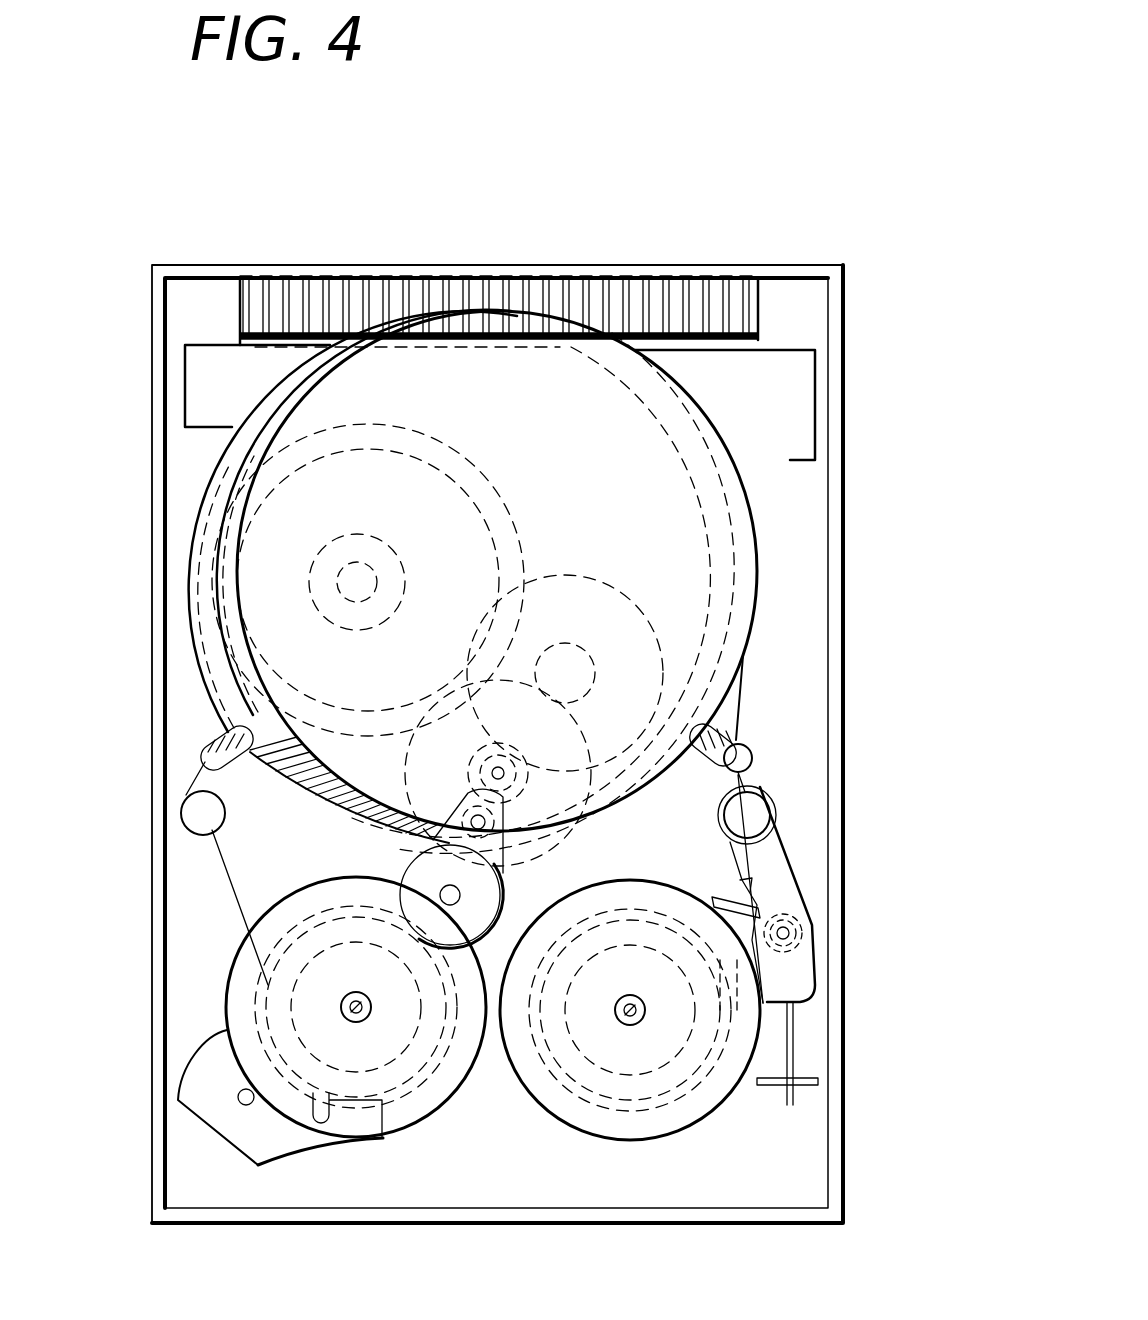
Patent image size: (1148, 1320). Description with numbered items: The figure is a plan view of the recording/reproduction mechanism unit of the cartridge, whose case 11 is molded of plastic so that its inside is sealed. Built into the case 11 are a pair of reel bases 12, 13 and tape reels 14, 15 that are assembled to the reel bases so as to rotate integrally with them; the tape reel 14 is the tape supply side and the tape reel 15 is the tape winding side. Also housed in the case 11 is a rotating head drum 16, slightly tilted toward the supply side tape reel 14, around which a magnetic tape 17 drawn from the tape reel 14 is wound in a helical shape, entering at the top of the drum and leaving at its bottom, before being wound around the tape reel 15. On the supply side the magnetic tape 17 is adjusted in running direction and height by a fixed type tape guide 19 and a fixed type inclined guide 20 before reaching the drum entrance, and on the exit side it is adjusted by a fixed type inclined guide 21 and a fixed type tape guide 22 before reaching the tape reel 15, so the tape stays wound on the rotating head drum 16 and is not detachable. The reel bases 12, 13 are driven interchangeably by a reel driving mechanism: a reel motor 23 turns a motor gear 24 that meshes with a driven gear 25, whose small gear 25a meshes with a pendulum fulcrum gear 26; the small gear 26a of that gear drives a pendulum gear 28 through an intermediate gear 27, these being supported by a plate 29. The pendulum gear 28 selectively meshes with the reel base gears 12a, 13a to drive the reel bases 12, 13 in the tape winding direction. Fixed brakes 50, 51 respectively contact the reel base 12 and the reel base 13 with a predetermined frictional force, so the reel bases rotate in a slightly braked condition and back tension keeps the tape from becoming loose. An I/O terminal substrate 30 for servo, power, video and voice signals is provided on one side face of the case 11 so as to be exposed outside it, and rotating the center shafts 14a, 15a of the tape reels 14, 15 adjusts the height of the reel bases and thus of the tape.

The case 11 is at (152, 606).
The reel base 12 is at (630, 1090).
The reel base gear 12a is at (693, 1095).
The reel base 13 is at (401, 1075).
The reel base gear 13a is at (452, 1040).
The tape reel 14 is at (567, 1135).
The center shaft 14a is at (640, 1022).
The tape reel 15 is at (454, 1092).
The center shaft 15a is at (356, 1022).
The rotating head drum 16 is at (722, 441).
The magnetic tape 17 is at (742, 692).
The tape guide 19 is at (752, 812).
The inclined guide 20 is at (746, 753).
The inclined guide 21 is at (198, 750).
The tape guide 22 is at (190, 816).
The reel motor 23 is at (210, 520).
The motor gear 24 is at (490, 512).
The driven gear 25 is at (598, 573).
The small gear 25a is at (592, 650).
The pendulum fulcrum gear 26 is at (560, 842).
The small gear 26a is at (428, 778).
The intermediate gear 27 is at (535, 860).
The pendulum gear 28 is at (428, 878).
The plate 29 is at (398, 887).
The I/O terminal substrate 30 is at (660, 273).
The fixed brake 50 is at (790, 897).
The fixed brake 51 is at (266, 1163).